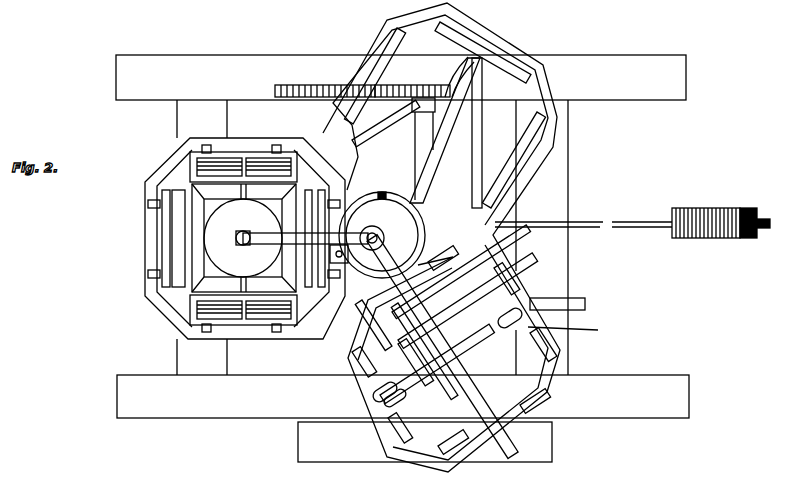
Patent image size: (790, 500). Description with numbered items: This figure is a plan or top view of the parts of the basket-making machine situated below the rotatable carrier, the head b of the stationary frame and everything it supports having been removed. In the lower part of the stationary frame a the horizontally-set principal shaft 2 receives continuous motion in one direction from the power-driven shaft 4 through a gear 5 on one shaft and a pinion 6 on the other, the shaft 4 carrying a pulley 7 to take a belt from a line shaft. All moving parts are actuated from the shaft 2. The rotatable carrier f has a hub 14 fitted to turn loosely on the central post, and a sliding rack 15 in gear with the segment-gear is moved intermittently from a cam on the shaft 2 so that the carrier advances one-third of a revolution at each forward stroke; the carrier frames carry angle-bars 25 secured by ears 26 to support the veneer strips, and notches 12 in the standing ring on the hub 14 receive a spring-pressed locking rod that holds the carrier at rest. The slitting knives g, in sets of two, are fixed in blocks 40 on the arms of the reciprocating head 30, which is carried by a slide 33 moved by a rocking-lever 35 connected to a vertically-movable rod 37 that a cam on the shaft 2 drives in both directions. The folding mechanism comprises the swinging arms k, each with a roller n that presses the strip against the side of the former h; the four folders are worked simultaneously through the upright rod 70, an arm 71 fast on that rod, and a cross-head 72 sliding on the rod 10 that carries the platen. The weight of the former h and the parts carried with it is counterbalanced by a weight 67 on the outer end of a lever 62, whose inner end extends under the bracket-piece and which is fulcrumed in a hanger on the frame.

The horizontally-set shaft 2 is at (333, 110).
The power-driven shaft 4 is at (430, 177).
The gear 5 is at (325, 83).
The pinion 6 is at (430, 95).
The pulley 7 is at (300, 448).
The rod 10 is at (246, 246).
The notches 12 is at (382, 235).
The hub 14 is at (425, 238).
The sliding rack 15 is at (587, 304).
The angle-bars 25 is at (160, 191).
The ears 26 is at (388, 38).
The reciprocating head 30 is at (412, 348).
The slide 33 is at (440, 348).
The rocking-lever 35 is at (395, 290).
The vertically-movable rod 37 is at (437, 347).
The blocks 40 is at (494, 398).
The lever 62 is at (310, 221).
The weight 67 is at (721, 211).
The upright rod 70 is at (398, 398).
The arm 71 is at (378, 234).
The cross-head 72 is at (243, 238).
The stationary frame a is at (372, 124).
The head b is at (312, 250).
The rotatable carrier f is at (115, 258).
The knives g is at (572, 335).
The former h is at (215, 190).
The swinging arms k is at (165, 222).
The roller n is at (225, 170).